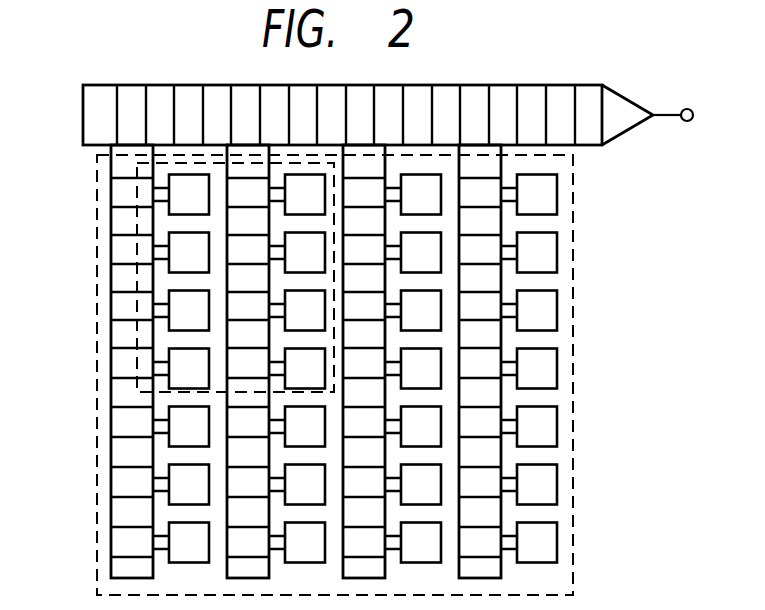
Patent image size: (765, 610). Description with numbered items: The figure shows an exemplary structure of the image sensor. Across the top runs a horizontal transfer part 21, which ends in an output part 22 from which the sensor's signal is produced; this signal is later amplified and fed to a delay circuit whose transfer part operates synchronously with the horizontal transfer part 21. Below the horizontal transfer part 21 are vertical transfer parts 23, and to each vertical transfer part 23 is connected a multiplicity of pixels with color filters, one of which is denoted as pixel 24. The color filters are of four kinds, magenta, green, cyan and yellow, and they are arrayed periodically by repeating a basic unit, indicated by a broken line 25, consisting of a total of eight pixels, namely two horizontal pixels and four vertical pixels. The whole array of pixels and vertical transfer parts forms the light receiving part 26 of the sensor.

The horizontal transfer part 21 is at (539, 85).
The output part 22 is at (630, 98).
The vertical transfer part 23 is at (501, 568).
The pixel 24 is at (557, 190).
The broken line indicating basic unit 25 is at (137, 362).
The light receiving part 26 is at (97, 400).